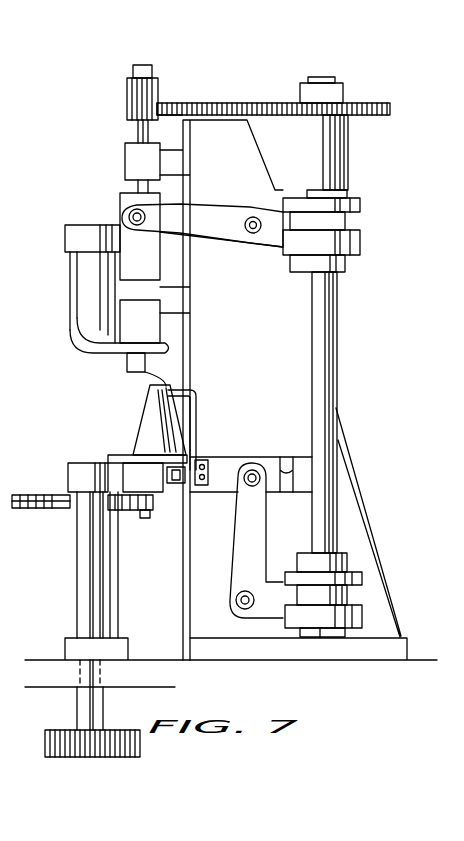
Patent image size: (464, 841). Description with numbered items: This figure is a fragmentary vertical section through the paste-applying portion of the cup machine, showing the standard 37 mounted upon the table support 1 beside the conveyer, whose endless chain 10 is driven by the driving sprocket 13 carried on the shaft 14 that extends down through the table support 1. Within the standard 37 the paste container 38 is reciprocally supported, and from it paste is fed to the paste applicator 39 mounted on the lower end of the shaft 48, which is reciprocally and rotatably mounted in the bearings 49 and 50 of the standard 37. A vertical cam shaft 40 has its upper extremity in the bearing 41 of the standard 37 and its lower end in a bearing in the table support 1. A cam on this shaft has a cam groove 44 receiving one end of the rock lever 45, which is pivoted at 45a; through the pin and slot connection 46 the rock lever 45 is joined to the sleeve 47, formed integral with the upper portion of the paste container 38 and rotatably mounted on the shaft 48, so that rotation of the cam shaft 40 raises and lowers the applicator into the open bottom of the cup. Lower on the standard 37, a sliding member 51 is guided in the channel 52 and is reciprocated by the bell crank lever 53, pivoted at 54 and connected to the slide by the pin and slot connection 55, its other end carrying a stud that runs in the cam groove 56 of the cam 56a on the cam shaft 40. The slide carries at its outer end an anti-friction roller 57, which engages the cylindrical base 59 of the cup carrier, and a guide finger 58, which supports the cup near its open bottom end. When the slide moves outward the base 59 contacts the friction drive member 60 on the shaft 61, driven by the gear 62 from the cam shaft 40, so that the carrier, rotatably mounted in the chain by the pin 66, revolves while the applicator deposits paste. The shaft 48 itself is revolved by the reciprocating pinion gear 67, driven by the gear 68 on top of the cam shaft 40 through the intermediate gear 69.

The table support 1 is at (423, 660).
The endless chain 10 is at (42, 508).
The driving sprocket 13 is at (137, 513).
The shaft 14 is at (118, 613).
The standard 37 is at (221, 390).
The paste container 38 is at (78, 272).
The paste applicator 39 is at (140, 376).
The cam shaft 40 is at (337, 358).
The bearing 41 is at (349, 160).
The cam groove 44 is at (360, 222).
The rock lever 45 is at (245, 248).
The pivot 45a is at (255, 235).
The pin and slot connection 46 is at (130, 214).
The sleeve 47 is at (142, 237).
The shaft 48 is at (139, 132).
The bearing 49 is at (125, 160).
The bearing 50 is at (105, 312).
The sliding member 51 is at (220, 483).
The channel 52 is at (290, 458).
The bell crank lever 53 is at (240, 538).
The pivot 54 is at (243, 607).
The pin and slot connection 55 is at (250, 468).
The cam groove 56 is at (355, 598).
The cam 56a is at (353, 572).
The anti-friction roller 57 is at (173, 484).
The guide finger 58 is at (197, 398).
The cylindrical base 59 is at (130, 458).
The friction drive member 60 is at (70, 470).
The shaft 61 is at (80, 567).
The gear 62 is at (78, 757).
The pin 66 is at (143, 512).
The reciprocating pinion gear 67 is at (130, 92).
The gear 68 is at (372, 103).
The intermediate gear 69 is at (250, 103).